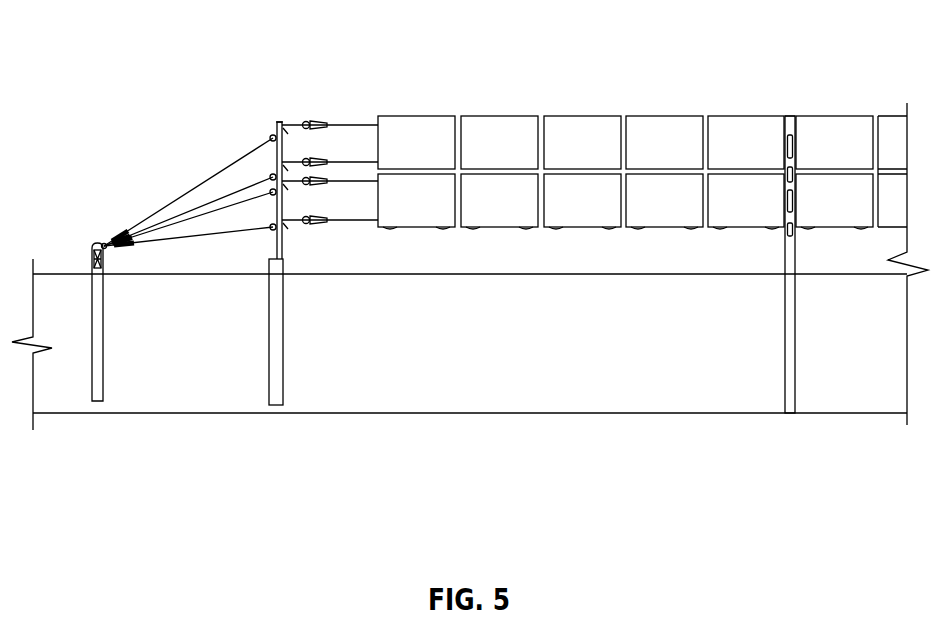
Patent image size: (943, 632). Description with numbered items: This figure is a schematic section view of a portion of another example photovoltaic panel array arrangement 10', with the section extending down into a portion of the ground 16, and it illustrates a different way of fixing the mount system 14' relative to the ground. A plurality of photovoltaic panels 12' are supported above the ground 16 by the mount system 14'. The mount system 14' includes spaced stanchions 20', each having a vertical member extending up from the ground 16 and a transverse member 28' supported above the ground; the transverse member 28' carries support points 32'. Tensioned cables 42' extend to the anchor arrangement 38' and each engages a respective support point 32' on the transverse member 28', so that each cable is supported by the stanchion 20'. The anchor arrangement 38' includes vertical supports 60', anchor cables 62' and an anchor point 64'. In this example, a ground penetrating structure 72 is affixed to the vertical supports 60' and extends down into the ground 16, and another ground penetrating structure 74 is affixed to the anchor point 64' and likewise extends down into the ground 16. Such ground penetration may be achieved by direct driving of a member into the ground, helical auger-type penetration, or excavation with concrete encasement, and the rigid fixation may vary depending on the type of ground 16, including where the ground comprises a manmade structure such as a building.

The photovoltaic panel array arrangement 10' is at (470, 259).
The photovoltaic panels 12' is at (642, 144).
The mount system 14' is at (295, 251).
The ground 16 is at (62, 400).
The stanchion 20' is at (829, 265).
The transverse member 28' is at (831, 204).
The support points 32' is at (806, 87).
The anchor arrangement 38' is at (185, 175).
The cables 42' is at (332, 142).
The vertical supports 60' is at (300, 90).
The anchor cables 62' is at (190, 175).
The anchor point 64' is at (61, 248).
The ground penetrating structure 72 is at (283, 375).
The ground penetrating structure 74 is at (103, 375).